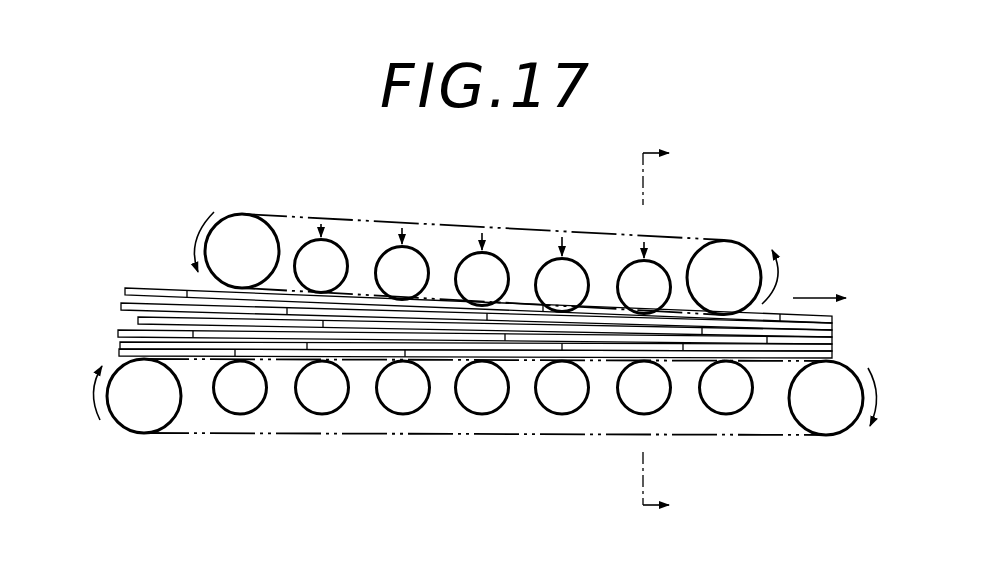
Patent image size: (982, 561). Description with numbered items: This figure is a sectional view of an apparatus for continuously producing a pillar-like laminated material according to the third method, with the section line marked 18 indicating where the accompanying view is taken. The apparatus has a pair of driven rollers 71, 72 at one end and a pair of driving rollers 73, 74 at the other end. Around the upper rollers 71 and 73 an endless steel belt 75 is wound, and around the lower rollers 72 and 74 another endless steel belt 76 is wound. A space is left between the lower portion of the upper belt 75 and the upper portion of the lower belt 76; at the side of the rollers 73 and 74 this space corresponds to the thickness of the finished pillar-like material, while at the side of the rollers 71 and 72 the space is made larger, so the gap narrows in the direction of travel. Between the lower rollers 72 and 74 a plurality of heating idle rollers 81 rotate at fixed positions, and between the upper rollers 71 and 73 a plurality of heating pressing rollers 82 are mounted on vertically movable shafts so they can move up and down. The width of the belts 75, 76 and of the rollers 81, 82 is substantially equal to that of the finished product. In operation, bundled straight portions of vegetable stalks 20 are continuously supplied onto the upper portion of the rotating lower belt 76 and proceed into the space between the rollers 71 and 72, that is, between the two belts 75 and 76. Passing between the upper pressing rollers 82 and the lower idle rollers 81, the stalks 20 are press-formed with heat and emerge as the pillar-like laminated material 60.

The vegetable stalks 20 is at (152, 289).
The pillar-like laminated material 60 is at (777, 314).
The driven roller 71 is at (237, 217).
The driven roller 72 is at (146, 432).
The driving roller 73 is at (737, 252).
The driving roller 74 is at (833, 430).
The endless steel belt 75 is at (530, 228).
The endless steel belt 76 is at (543, 435).
The heating idle rollers 81 is at (472, 400).
The heating pressing rollers 82 is at (470, 262).
The section line 18- 18 is at (678, 332).